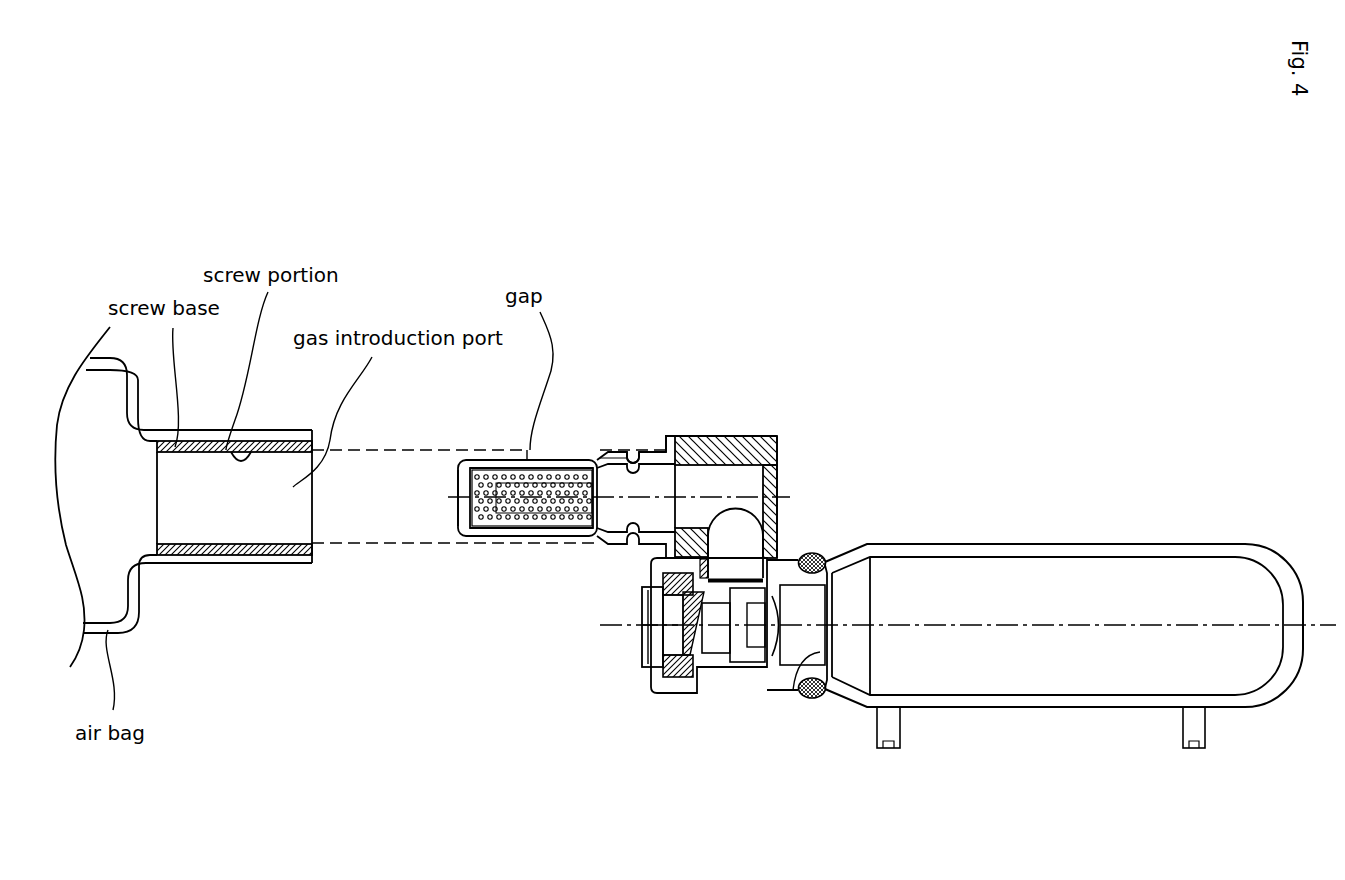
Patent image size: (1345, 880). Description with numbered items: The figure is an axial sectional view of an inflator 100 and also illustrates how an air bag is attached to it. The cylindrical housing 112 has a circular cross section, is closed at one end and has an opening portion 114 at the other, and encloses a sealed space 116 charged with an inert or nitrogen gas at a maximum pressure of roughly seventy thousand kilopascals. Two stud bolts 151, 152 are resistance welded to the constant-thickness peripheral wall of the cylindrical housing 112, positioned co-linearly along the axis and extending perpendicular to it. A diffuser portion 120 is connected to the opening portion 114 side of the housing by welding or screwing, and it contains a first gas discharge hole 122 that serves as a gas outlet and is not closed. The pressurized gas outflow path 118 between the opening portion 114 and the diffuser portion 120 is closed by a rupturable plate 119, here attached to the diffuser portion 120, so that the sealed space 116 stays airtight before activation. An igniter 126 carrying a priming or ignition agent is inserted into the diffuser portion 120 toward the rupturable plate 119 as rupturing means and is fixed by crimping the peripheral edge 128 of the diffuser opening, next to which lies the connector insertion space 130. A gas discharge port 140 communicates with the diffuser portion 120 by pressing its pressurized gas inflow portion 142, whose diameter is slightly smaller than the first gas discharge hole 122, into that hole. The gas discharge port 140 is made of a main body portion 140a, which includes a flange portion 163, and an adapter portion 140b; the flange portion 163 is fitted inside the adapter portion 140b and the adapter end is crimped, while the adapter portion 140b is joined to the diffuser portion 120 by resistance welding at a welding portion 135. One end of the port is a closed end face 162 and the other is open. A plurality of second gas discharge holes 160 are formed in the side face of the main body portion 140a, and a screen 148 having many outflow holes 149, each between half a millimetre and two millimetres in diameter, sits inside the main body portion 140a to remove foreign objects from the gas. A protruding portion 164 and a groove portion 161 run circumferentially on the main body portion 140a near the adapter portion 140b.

The inflator 100 is at (987, 521).
The cylindrical housing 112 is at (1132, 545).
The opening portion 114 is at (805, 700).
The sealed space 116 is at (973, 617).
The pressurized gas outflow path 118 is at (767, 652).
The rupturable plate 119 is at (770, 664).
The diffuser portion 120 is at (696, 694).
The first gas discharge hole 122 is at (740, 578).
The igniter 126 is at (702, 652).
The peripheral edge 128 is at (655, 676).
The connector insertion space 130 is at (655, 607).
The welding portion 135 is at (779, 543).
The gas discharge port 140 is at (758, 314).
The main body portion 140a is at (565, 447).
The adapter portion 140b is at (733, 436).
The pressurized gas inflow portion 142 is at (735, 440).
The screen 148 is at (482, 480).
The outflow holes 149 is at (483, 536).
The stud bolt 151 is at (887, 749).
The stud bolt 152 is at (1193, 749).
The second gas discharge holes 160 is at (512, 462).
The groove portion 161 is at (641, 450).
The closed end face 162 is at (452, 514).
The flange portion 163 is at (665, 440).
The protruding portion 164 is at (612, 452).